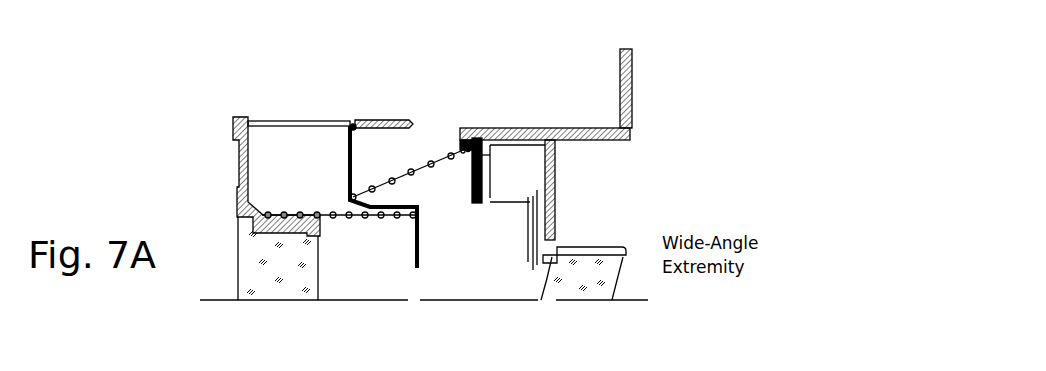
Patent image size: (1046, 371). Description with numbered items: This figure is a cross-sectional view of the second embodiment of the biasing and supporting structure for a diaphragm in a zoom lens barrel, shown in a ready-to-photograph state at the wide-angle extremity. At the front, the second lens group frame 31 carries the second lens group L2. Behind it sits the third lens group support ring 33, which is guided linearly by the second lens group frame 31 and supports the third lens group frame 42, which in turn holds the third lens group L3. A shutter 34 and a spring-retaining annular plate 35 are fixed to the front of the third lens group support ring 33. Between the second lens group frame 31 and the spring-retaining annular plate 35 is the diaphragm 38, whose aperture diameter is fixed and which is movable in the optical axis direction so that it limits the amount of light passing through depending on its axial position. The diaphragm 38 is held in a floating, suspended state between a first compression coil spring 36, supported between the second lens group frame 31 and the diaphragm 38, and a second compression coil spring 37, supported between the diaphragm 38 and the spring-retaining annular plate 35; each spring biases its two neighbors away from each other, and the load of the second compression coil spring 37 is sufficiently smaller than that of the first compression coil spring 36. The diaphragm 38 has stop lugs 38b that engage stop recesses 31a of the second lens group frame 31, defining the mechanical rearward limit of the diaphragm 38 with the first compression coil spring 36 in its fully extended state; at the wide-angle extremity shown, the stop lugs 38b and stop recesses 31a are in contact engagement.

The second lens group frame 31 is at (233, 200).
The stop recesses 31a is at (362, 124).
The third lens group support ring 33 is at (555, 163).
The shutter 34 is at (514, 193).
The spring-retaining annular plate 35 is at (477, 205).
The first compression coil spring 36 is at (316, 212).
The second compression coil spring 37 is at (432, 168).
The diaphragm 38 is at (417, 263).
The stop lugs 38b is at (352, 124).
The third lens group frame 42 is at (612, 247).
The second lens group L2 is at (277, 290).
The third lens group L3 is at (570, 288).